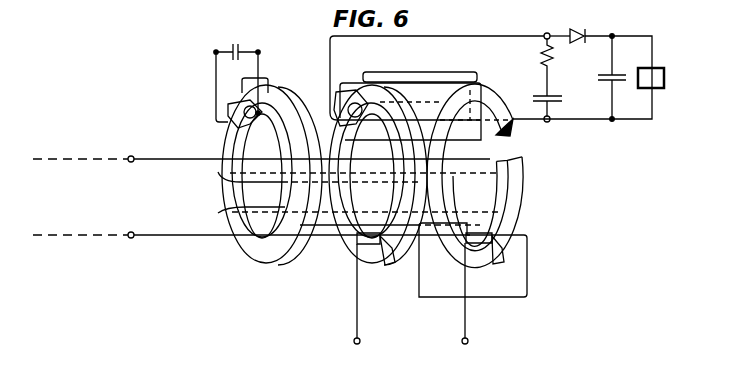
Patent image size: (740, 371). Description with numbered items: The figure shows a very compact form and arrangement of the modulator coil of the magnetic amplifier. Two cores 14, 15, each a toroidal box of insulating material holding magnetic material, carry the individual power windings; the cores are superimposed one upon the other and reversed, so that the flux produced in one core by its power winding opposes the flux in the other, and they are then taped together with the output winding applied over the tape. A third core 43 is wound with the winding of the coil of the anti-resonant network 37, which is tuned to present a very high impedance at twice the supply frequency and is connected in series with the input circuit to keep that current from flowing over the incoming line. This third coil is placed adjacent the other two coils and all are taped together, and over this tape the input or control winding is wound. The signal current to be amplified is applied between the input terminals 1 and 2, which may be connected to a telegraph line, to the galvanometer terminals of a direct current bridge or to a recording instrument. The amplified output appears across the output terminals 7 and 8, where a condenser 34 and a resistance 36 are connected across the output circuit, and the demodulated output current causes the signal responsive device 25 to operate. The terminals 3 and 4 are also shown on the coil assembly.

The input terminal 1 is at (261, 149).
The input terminal 2 is at (251, 225).
The output terminal 3 is at (357, 305).
The output terminal 4 is at (473, 294).
The output terminal 7 is at (549, 26).
The output terminal 8 is at (547, 130).
The core 14 is at (523, 193).
The core 15 is at (352, 266).
The signal responsive device 25 is at (666, 79).
The condenser 34 is at (563, 101).
The resistance 36 is at (540, 60).
The anti-resonant network 37 is at (216, 86).
The third core 43 is at (252, 266).